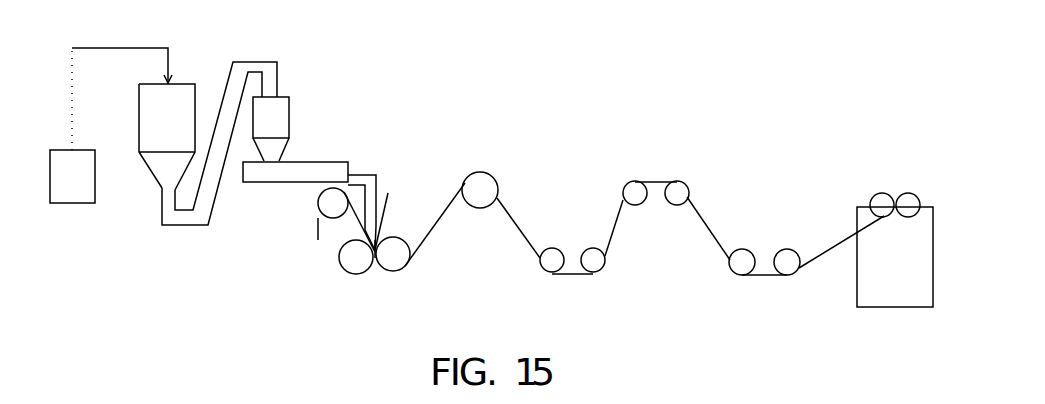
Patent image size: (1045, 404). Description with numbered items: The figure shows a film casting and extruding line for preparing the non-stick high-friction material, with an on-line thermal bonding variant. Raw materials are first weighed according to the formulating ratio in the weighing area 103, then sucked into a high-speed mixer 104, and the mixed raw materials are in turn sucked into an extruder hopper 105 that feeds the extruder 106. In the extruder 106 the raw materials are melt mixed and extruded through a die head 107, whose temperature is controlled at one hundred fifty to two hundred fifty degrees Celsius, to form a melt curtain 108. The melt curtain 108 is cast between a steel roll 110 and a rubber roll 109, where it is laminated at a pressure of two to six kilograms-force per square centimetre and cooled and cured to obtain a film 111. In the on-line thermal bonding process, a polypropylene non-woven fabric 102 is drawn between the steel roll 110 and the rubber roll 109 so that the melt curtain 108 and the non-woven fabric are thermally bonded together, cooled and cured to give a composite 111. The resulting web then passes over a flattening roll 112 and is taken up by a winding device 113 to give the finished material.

The polypropylene non-woven fabric 102 is at (318, 223).
The weighing area 103 is at (67, 193).
The high-speed mixer 104 is at (183, 89).
The extruder hopper 105 is at (272, 128).
The extruder 106 is at (307, 170).
The die head 107 is at (383, 197).
The melt curtain 108 is at (378, 246).
The rubber roll 109 is at (342, 268).
The steel roll 110 is at (401, 273).
The film 111 is at (513, 219).
The flattening roll 112 is at (603, 270).
The winding device 113 is at (895, 290).